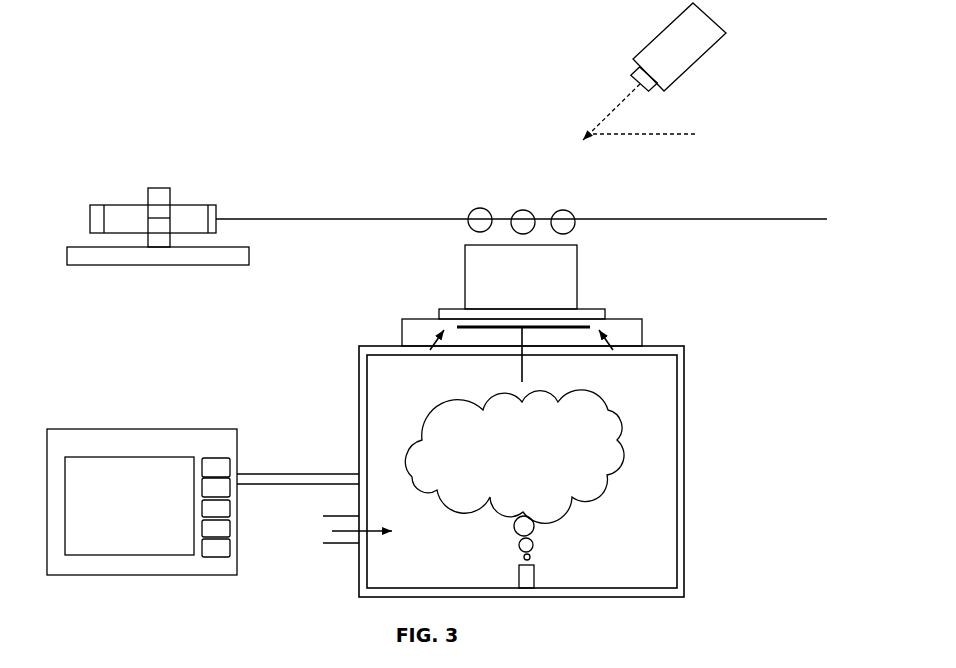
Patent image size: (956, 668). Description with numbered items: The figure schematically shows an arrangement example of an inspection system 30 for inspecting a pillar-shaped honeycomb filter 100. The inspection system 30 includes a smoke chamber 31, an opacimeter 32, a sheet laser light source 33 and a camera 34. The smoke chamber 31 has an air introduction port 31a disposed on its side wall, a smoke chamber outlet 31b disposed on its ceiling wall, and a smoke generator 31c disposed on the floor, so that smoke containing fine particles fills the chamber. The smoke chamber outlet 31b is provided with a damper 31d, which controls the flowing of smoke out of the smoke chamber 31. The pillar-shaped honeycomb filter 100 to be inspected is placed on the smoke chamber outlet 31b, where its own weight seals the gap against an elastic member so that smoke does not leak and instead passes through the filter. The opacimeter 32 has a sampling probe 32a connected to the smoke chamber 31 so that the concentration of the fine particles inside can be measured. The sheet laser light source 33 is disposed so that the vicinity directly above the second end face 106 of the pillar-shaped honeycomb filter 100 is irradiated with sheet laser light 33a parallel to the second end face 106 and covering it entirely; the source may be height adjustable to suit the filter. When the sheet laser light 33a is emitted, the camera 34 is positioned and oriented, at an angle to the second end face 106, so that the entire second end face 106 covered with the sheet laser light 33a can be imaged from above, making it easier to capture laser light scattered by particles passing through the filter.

The inspection system 30 is at (110, 110).
The smoke chamber 31 is at (688, 414).
The air introduction port 31a is at (326, 532).
The smoke chamber outlet 31b is at (592, 307).
The smoke generator 31c is at (537, 567).
The damper 31d is at (523, 363).
The opacimeter 32 is at (126, 428).
The sampling probe 32a is at (277, 472).
The sheet laser light source 33 is at (190, 204).
The sheet laser light 33a is at (332, 218).
The camera 34 is at (703, 63).
The pillar-shaped honeycomb filter 100 is at (462, 283).
The second end face 106 is at (503, 243).